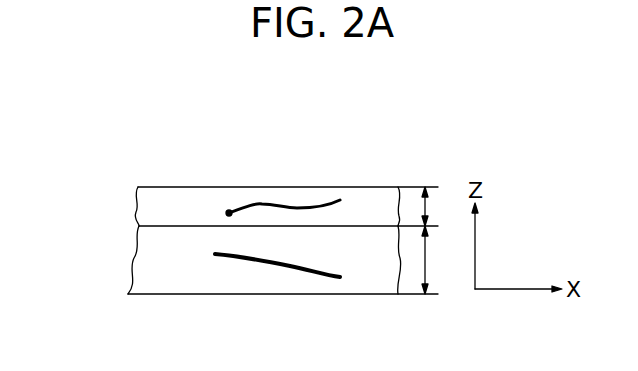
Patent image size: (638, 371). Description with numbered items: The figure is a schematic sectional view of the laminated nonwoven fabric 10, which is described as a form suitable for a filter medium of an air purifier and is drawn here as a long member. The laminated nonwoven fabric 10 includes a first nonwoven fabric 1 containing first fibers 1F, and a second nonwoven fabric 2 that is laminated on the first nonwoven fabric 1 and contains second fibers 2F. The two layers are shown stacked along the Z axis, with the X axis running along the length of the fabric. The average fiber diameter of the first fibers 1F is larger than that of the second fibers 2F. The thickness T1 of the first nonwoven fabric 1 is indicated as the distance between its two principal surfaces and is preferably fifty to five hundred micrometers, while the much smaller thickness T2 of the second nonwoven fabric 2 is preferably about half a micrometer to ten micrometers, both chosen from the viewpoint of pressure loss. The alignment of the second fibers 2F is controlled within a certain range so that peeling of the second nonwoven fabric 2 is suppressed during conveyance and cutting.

The laminated nonwoven fabric 10 is at (305, 133).
The second nonwoven fabric 2 is at (160, 211).
The first nonwoven fabric 1 is at (152, 269).
The second fibers 2F is at (277, 204).
The first fibers 1F is at (250, 260).
The thickness of second nonwoven fabric T2 is at (440, 206).
The thickness of first nonwoven fabric T1 is at (440, 260).